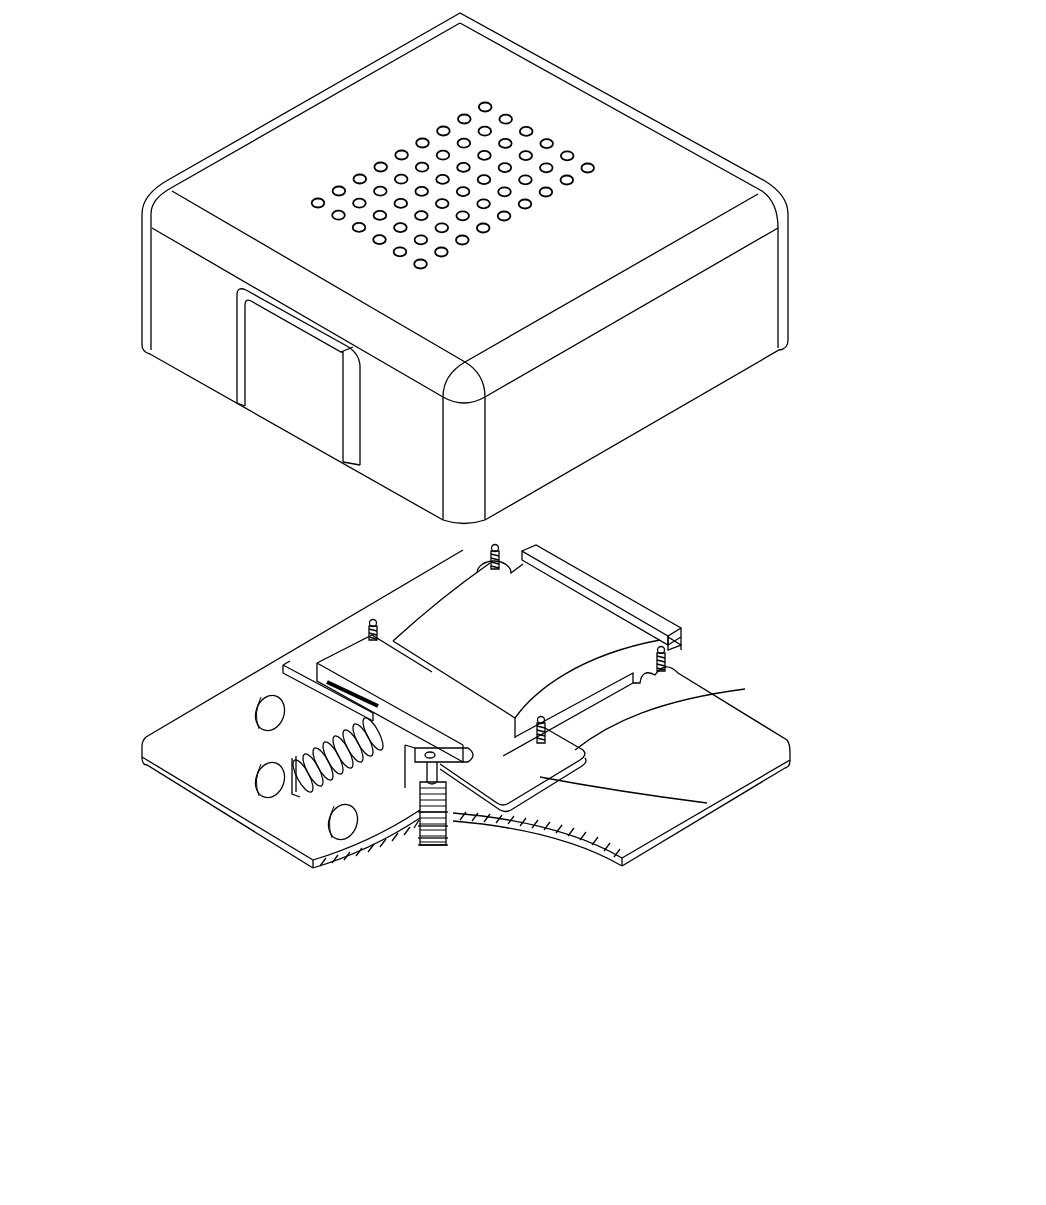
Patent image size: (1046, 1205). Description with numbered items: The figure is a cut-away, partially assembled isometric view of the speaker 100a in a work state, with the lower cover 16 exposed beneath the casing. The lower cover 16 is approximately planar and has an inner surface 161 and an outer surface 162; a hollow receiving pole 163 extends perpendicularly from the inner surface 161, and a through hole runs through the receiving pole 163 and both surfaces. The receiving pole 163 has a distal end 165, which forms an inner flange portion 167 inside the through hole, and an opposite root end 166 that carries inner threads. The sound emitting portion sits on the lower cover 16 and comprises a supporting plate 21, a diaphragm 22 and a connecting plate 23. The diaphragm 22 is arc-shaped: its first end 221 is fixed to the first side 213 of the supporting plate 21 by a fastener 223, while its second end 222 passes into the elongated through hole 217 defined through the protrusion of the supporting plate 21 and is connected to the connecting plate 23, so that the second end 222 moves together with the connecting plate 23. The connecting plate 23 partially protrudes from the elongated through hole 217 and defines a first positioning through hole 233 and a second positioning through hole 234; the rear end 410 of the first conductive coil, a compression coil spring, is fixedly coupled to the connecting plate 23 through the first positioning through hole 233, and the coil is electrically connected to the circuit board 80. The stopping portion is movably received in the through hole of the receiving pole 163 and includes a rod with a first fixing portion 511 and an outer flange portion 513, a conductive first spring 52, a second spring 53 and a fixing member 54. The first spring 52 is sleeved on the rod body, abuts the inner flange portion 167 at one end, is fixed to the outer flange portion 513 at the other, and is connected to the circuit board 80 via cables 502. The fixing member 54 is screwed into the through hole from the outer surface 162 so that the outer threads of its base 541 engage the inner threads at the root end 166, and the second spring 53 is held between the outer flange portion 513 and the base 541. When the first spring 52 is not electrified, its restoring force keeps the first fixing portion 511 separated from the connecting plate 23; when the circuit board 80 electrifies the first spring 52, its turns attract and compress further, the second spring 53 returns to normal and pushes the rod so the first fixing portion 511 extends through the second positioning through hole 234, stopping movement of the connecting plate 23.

The speaker 100a is at (656, 62).
The lower cover 16 is at (83, 703).
The inner surface 161 is at (173, 730).
The outer surface 162 is at (160, 775).
The receiving pole 163 is at (387, 927).
The distal end 165 is at (410, 828).
The root end 166 is at (425, 832).
The inner flange portion 167 is at (330, 815).
The supporting plate 21 is at (337, 662).
The first side 213 is at (682, 645).
The elongated through hole 217 is at (300, 680).
The first end 221 is at (492, 550).
The second end 222 is at (394, 641).
The fastener 223 is at (570, 570).
The diaphragm 22 is at (592, 613).
The connecting plate 23 is at (292, 795).
The first positioning through hole 233 is at (380, 723).
The second positioning through hole 234 is at (452, 787).
The rear end 410 is at (283, 668).
The circuit board 80 is at (670, 700).
The first fixing portion 511 is at (450, 800).
The cables 502 is at (440, 827).
The first spring 52 is at (440, 830).
The outer flange portion 513 is at (440, 830).
The second spring 53 is at (440, 830).
The fixing member 54 is at (452, 857).
The base 541 is at (430, 840).